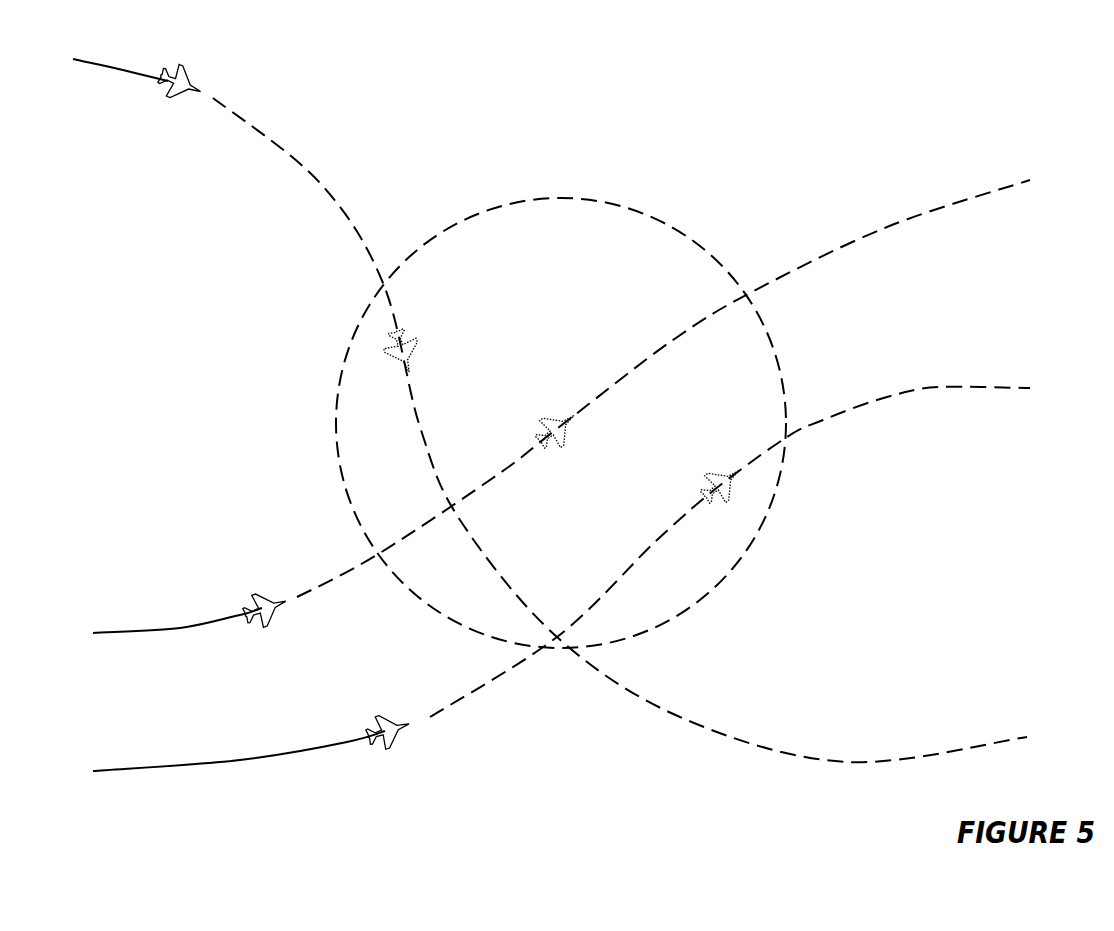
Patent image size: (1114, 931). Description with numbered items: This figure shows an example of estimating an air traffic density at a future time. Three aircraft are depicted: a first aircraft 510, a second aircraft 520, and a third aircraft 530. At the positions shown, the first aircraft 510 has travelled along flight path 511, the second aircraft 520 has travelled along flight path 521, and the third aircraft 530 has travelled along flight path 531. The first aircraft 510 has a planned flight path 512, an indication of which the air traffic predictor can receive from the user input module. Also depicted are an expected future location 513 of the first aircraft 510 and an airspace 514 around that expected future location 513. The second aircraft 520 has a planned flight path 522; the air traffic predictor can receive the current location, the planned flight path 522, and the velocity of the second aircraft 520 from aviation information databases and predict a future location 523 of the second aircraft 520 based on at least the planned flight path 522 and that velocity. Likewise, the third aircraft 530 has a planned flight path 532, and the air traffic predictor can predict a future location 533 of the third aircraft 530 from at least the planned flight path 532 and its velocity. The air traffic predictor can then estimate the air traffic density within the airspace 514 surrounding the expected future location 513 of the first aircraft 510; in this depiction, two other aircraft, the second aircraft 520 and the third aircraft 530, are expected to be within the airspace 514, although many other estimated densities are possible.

The first aircraft 510 is at (268, 593).
The flight path 511 is at (130, 629).
The planned flight path 512 is at (887, 227).
The expected future location 513 is at (556, 410).
The airspace 514 is at (563, 198).
The second aircraft 520 is at (391, 715).
The flight path 521 is at (130, 769).
The planned flight path 522 is at (887, 397).
The future location 523 is at (719, 466).
The third aircraft 530 is at (188, 70).
The flight path 531 is at (122, 72).
The planned flight path 532 is at (887, 762).
The future location 533 is at (420, 352).